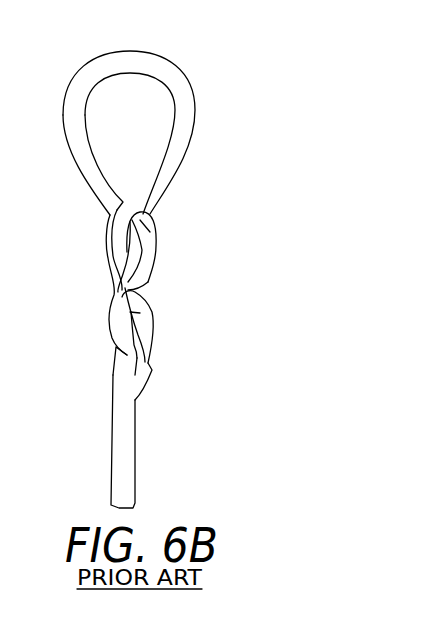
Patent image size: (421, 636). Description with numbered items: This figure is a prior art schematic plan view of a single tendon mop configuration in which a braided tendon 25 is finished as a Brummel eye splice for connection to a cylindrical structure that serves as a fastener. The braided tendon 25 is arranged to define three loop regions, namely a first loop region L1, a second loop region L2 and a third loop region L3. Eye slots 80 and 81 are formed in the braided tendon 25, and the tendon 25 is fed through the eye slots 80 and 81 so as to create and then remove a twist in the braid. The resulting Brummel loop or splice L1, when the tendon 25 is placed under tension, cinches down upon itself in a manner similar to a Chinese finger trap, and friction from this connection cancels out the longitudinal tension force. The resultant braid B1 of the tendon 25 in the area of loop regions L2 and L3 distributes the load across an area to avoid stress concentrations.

The braided tendon 25 is at (207, 258).
The loop region L1 is at (133, 128).
The eye slot 80 is at (150, 232).
The loop region L2 is at (150, 263).
The eye slot 81 is at (152, 300).
The loop region L3 is at (182, 357).
The resultant braid B1 is at (229, 327).